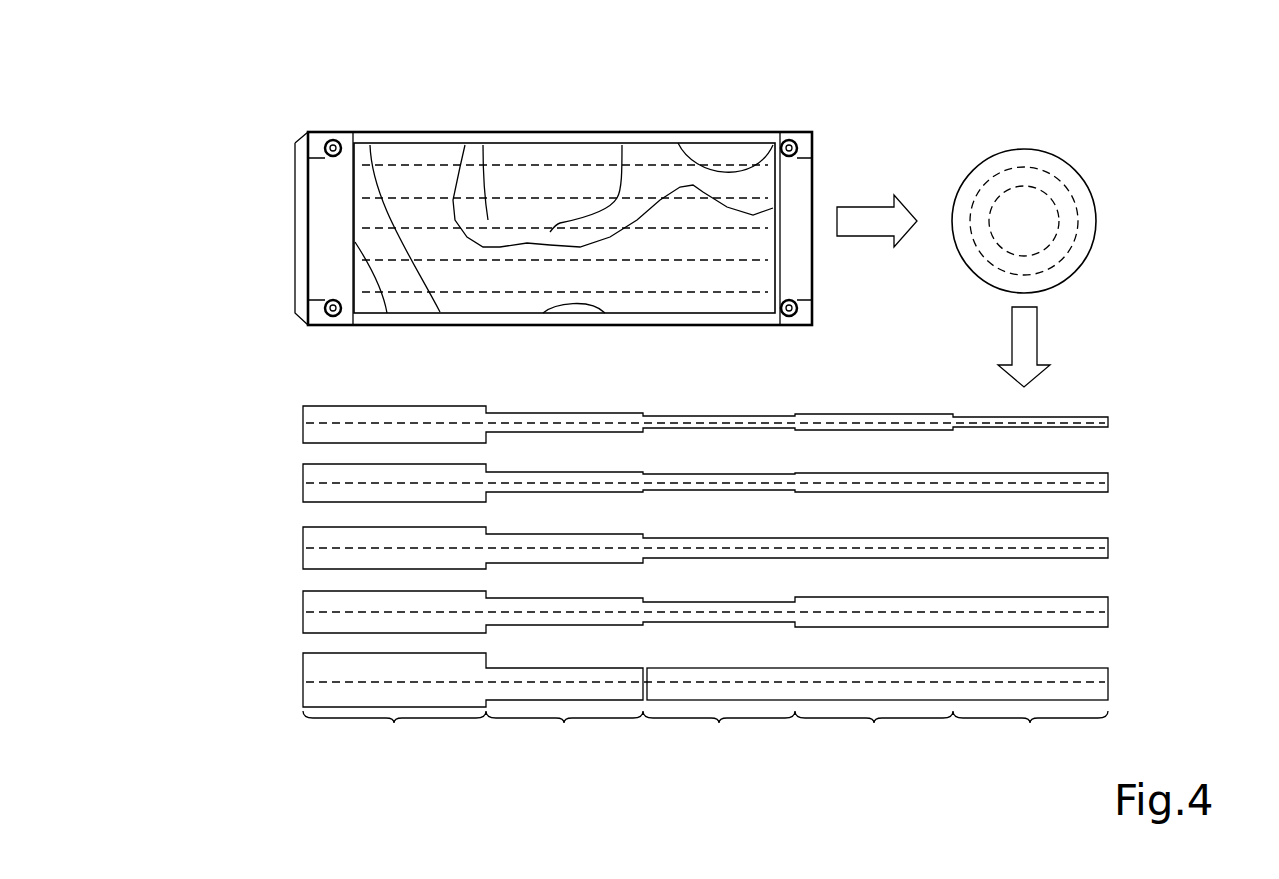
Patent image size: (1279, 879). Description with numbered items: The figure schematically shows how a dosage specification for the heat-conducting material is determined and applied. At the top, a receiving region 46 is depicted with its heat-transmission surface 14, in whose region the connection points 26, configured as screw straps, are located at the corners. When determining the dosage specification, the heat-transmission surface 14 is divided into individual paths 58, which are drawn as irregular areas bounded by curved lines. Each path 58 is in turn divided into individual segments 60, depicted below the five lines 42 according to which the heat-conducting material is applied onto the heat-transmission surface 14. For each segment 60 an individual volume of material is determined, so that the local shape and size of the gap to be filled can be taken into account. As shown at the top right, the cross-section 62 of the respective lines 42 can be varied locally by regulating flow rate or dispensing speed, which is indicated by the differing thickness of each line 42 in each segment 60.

The heat-transmission surface 14 is at (387, 150).
The connection points 26 is at (325, 142).
The lines 42 is at (258, 423).
The receiving region 46 is at (681, 102).
The paths 58 is at (406, 163).
The segments 60 is at (705, 734).
The cross-section 62 is at (1099, 156).